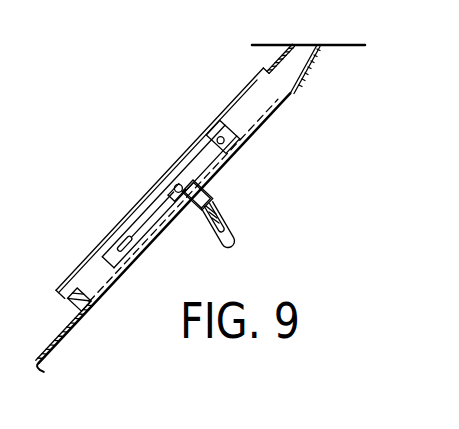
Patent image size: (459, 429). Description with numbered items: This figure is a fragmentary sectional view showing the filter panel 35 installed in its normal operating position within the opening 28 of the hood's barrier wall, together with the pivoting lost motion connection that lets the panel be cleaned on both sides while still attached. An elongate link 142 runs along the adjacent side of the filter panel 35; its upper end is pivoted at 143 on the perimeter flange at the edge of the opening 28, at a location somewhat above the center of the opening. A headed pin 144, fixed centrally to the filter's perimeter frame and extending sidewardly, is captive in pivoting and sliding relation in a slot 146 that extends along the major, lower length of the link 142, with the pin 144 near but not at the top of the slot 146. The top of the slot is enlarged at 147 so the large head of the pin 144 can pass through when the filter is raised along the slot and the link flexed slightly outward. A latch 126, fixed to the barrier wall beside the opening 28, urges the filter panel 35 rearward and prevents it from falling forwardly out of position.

The link 142 is at (202, 164).
The headed pin 144 is at (166, 190).
The slot 146 is at (130, 243).
The enlarged top of slot 147 is at (185, 185).
The pivot 143 is at (217, 123).
The filter panel 35 is at (260, 105).
The opening 28 is at (292, 89).
The latch 126 is at (222, 222).